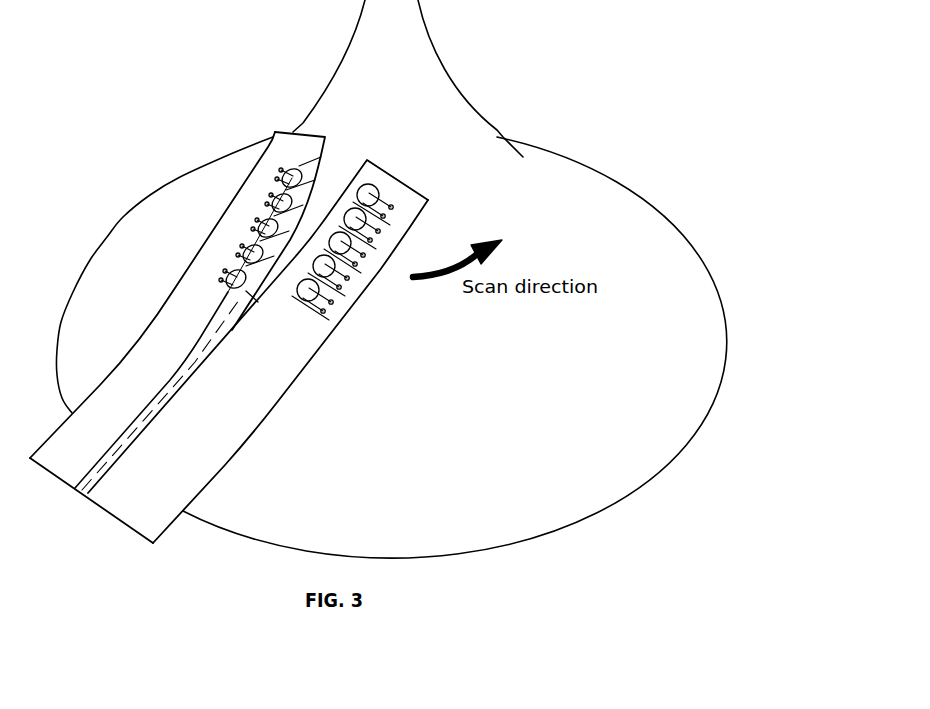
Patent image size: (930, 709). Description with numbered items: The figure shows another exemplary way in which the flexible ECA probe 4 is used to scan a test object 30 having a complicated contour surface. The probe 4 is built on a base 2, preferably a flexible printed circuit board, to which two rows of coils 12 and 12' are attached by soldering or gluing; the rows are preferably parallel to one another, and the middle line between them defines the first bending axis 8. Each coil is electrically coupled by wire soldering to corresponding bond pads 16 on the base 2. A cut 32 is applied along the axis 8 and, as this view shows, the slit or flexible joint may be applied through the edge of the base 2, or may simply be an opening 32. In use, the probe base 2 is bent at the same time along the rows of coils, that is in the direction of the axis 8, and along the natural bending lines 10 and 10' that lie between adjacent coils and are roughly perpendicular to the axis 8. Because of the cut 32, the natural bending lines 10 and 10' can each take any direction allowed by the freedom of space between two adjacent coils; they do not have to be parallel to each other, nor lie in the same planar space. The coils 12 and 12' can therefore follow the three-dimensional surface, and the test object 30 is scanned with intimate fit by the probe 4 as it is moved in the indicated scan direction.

The base 2 is at (180, 494).
The flexible ECA probe 4 is at (295, 400).
The first bending axis 8 is at (68, 500).
The natural bending line 10 is at (364, 267).
The natural bending line 10' is at (239, 216).
The coils 12 is at (300, 310).
The coils 12' is at (215, 288).
The bond pads 16 is at (396, 208).
The test object 30 is at (593, 490).
The cut 32 is at (305, 236).